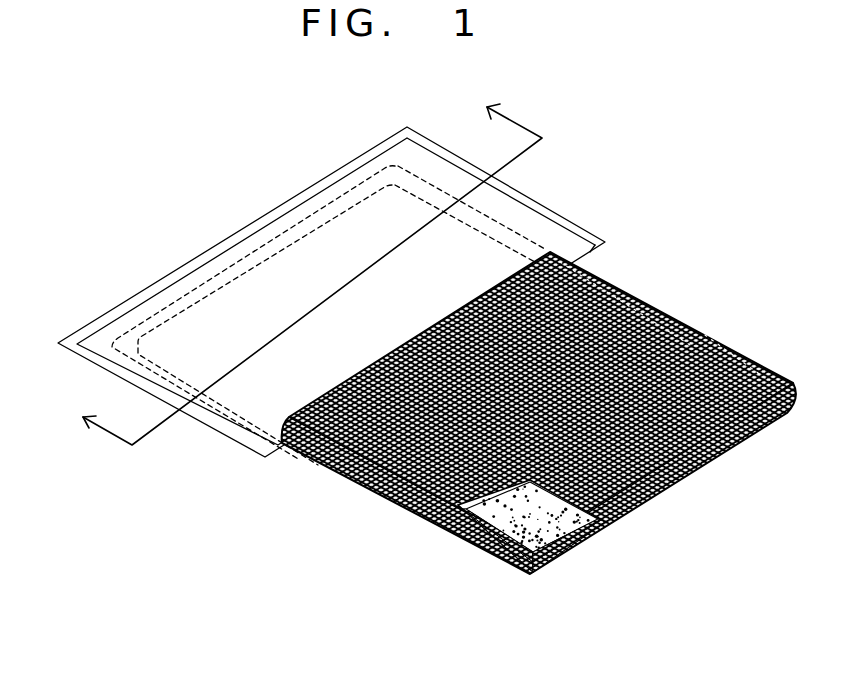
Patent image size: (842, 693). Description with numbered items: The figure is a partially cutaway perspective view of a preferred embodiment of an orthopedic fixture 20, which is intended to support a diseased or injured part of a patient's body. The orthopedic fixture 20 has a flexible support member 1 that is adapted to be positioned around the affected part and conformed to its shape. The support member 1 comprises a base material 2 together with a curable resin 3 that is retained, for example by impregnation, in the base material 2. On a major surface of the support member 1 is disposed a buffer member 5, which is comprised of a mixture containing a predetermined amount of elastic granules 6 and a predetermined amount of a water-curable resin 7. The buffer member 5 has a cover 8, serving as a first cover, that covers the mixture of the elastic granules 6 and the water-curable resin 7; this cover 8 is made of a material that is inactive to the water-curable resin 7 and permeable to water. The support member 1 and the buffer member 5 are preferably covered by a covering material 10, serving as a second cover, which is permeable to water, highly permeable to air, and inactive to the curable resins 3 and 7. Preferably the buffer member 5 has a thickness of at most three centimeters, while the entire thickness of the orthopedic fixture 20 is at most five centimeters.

The support member 1 is at (562, 556).
The base material 2 is at (516, 559).
The curable resin 3 is at (478, 543).
The buffer member 5 is at (682, 343).
The elastic granules 6 is at (607, 529).
The water-curable resin 7 is at (636, 509).
The cover 8 is at (683, 478).
The covering material 10 is at (264, 310).
The orthopedic fixture 20 is at (624, 149).